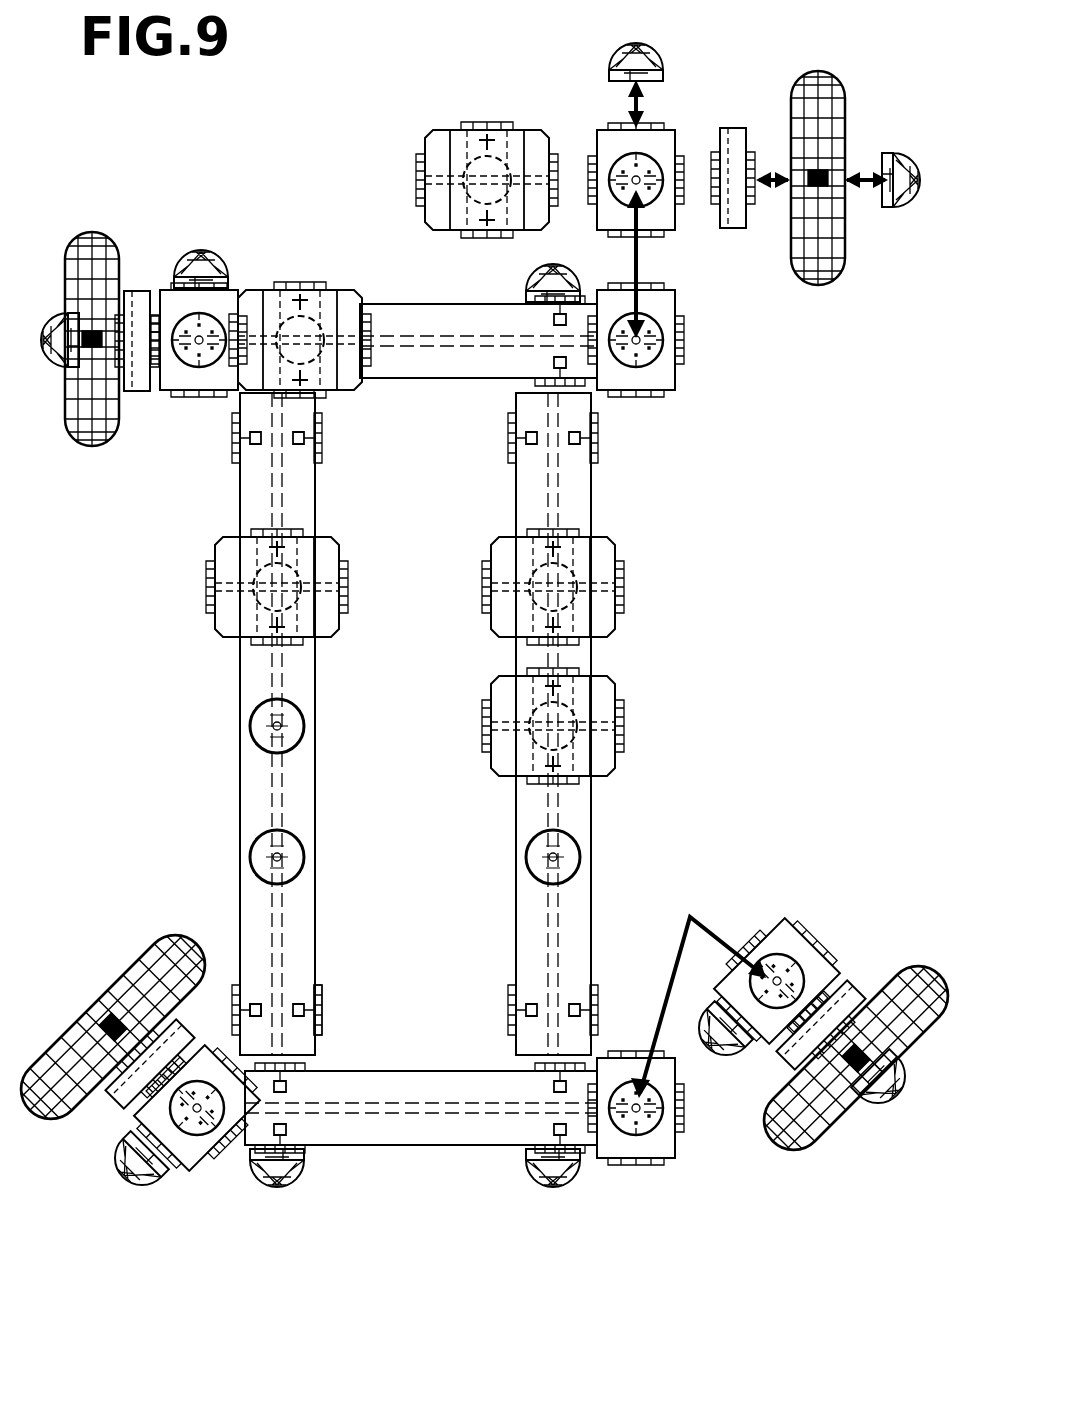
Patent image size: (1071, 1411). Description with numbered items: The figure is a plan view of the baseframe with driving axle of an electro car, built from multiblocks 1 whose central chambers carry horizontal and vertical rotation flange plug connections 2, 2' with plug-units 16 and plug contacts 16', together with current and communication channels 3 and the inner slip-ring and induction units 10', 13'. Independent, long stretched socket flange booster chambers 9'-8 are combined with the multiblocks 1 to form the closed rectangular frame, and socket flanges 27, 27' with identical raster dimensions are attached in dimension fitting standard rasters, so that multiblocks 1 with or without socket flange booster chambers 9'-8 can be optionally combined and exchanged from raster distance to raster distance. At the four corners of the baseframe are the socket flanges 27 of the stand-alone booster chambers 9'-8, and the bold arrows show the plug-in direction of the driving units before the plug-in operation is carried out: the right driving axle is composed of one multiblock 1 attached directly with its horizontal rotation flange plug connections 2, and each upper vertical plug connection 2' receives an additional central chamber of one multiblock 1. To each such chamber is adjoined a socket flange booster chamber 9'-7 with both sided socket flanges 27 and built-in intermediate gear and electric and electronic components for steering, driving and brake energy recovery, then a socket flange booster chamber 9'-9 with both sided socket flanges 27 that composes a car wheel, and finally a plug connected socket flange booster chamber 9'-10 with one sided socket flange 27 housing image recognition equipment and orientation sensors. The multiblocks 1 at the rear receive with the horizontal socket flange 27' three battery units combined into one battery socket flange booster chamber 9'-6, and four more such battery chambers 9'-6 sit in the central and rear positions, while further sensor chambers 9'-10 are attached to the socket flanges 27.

The socket flange booster chamber for image recognition 9'-10 is at (480, 610).
The battery socket flange booster chamber 9'-6 is at (415, 419).
The socket flange booster chamber composing a car wheel 9'-9 is at (484, 587).
The plug-unit 16 is at (485, 621).
The plug contact 16' is at (300, 307).
The rotation flange plug connection 2 is at (478, 314).
The rotation flange plug connection 2' is at (478, 341).
The multiblock 1 is at (680, 340).
The socket flange booster chamber 9'-8 is at (415, 770).
The socket flange booster chamber with built-in equipment 9'-7 is at (496, 652).
The horizontal socket flange 27' is at (392, 791).
The socket flange 27 is at (591, 912).
The inner slip-ring and induction unit 10' is at (192, 928).
The inner slip-ring and induction unit 13' is at (255, 1010).
The current and communication channel 3 is at (322, 1032).